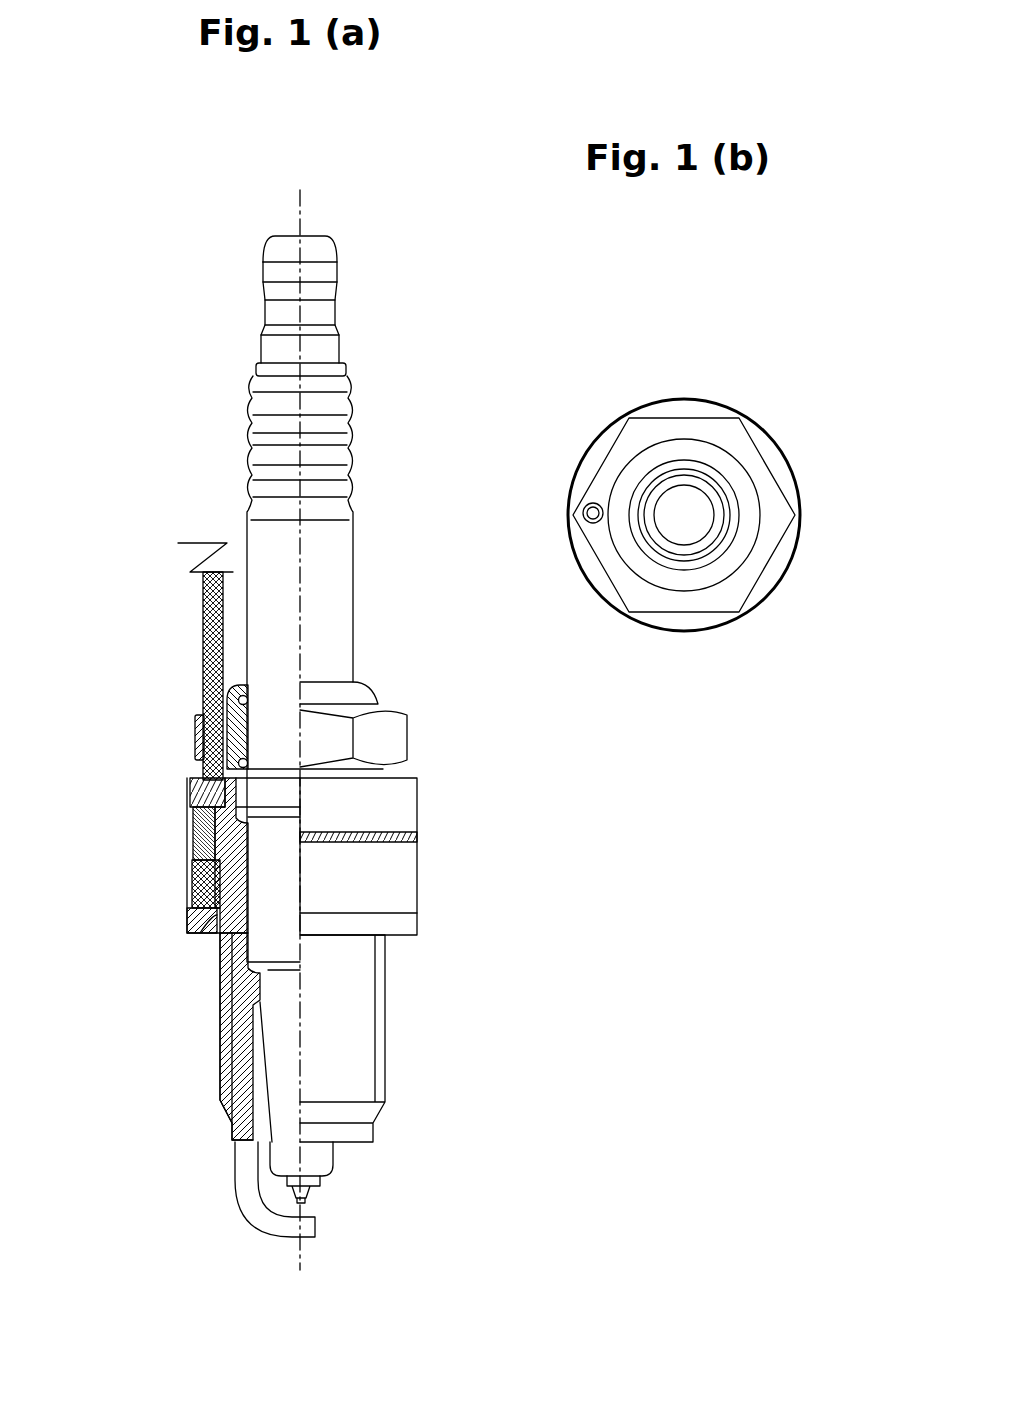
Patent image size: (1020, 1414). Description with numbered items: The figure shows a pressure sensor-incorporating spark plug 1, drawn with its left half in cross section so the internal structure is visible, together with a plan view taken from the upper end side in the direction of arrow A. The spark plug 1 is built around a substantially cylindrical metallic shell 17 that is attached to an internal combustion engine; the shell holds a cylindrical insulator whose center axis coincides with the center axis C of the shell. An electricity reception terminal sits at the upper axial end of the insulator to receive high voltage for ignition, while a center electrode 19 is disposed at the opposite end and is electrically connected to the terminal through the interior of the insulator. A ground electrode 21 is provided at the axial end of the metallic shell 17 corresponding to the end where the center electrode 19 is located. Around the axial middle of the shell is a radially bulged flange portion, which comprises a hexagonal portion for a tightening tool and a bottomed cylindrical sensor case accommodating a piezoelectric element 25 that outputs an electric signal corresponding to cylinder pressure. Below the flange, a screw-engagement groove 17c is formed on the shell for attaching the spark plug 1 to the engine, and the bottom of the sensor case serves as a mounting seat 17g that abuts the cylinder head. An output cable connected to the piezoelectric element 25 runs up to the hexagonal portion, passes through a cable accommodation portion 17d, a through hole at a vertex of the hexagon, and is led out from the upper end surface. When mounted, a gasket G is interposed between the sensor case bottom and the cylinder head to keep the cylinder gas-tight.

The pressure sensor-incorporating spark plug 1 is at (452, 226).
The metallic shell 17 is at (623, 800).
The screw-engagement groove 17c is at (380, 1003).
The cable accommodation portion 17d is at (196, 737).
The mounting seat 17g is at (385, 922).
The center electrode 19 is at (310, 1198).
The ground electrode 21 is at (277, 1240).
The piezoelectric element 25 is at (205, 887).
The arrow A is at (300, 172).
The center axis C is at (305, 233).
The gasket G is at (190, 935).